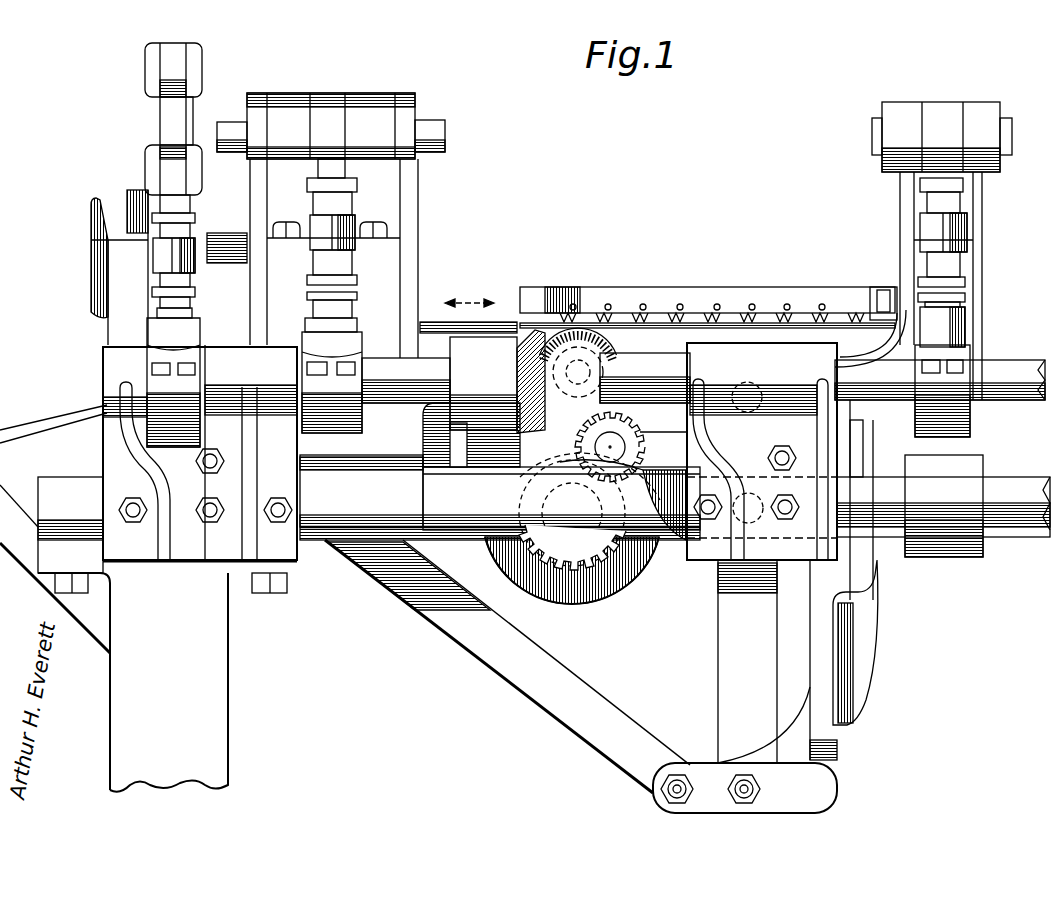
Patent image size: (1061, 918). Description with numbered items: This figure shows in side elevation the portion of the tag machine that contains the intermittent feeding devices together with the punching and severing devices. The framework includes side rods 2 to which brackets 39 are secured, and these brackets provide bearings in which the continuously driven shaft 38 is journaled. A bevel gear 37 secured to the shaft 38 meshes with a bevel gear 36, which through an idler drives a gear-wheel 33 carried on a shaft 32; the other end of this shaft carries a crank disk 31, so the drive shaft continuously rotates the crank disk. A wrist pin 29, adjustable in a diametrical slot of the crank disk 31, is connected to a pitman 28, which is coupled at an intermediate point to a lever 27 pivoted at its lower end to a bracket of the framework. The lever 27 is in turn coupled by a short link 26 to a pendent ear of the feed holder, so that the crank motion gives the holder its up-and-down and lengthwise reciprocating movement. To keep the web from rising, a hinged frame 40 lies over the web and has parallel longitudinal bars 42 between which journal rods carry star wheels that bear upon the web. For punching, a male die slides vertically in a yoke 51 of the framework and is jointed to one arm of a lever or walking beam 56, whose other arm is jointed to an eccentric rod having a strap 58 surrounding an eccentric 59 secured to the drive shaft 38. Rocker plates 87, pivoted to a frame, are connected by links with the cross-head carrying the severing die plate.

The side rods 2 is at (998, 478).
The short link 26 is at (730, 383).
The lever 27 is at (767, 637).
The pitman 28 is at (700, 515).
The wrist pin 29 is at (520, 492).
The crank disk 31 is at (640, 436).
The shaft 32 is at (618, 585).
The gear-wheel 33 is at (548, 590).
The bevel gear 36 is at (582, 340).
The bevel gear 37 is at (530, 345).
The shaft 38 is at (393, 372).
The brackets 39 is at (258, 352).
The hinged frame 40 is at (879, 290).
The parallel longitudinal bars 42 is at (815, 295).
The yoke 51 is at (965, 290).
The lever or walking beam 56 is at (985, 108).
The strap 58 is at (960, 360).
The eccentric 59 is at (990, 385).
The rocker plates 87 is at (162, 125).